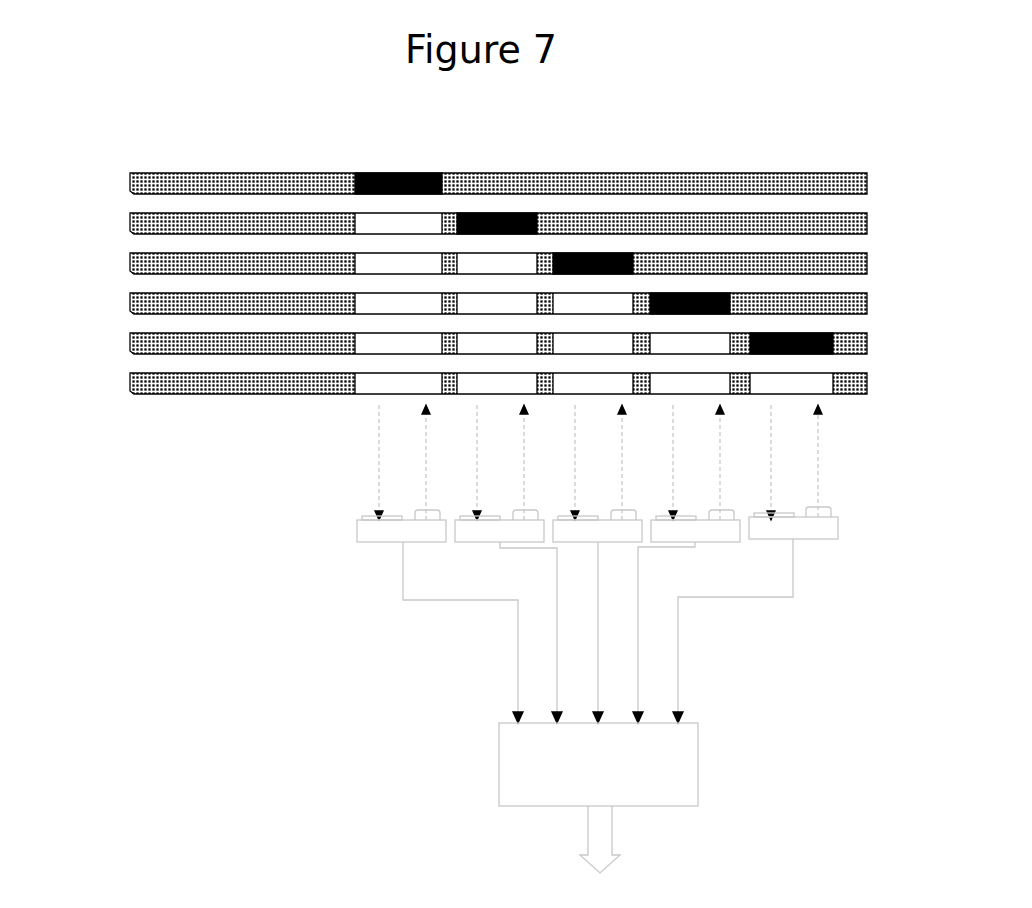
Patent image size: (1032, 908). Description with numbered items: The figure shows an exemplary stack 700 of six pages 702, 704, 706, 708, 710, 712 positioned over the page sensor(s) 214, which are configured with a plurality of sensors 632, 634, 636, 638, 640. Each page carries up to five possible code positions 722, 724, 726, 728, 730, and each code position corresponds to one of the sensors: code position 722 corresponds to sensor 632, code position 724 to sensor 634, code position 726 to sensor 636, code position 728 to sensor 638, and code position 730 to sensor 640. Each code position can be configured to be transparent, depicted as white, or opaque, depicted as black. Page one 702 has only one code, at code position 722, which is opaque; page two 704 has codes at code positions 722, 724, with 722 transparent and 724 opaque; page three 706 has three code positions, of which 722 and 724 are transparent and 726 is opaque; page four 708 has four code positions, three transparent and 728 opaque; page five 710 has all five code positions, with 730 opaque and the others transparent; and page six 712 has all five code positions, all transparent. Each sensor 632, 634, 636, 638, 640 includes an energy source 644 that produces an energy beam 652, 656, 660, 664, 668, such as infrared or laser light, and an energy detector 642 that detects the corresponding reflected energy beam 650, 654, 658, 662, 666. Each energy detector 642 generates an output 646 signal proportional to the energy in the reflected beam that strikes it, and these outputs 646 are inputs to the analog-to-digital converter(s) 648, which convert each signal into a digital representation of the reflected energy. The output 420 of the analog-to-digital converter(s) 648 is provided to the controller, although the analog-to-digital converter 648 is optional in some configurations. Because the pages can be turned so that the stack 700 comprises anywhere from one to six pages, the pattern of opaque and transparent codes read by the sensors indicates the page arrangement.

The stack 700 is at (843, 107).
The page one 702 is at (116, 186).
The page two 704 is at (116, 228).
The page three 706 is at (116, 270).
The page four 708 is at (116, 310).
The page five 710 is at (116, 351).
The page six 712 is at (116, 392).
The code position 722 is at (391, 150).
The code position 724 is at (503, 203).
The code position 726 is at (597, 242).
The code position 728 is at (708, 282).
The code position 730 is at (809, 321).
The page sensor(s) 214 is at (327, 698).
The sensor 632 is at (357, 533).
The sensor 634 is at (467, 543).
The sensor 636 is at (578, 543).
The sensor 638 is at (728, 543).
The sensor 640 is at (838, 535).
The energy detector 642 is at (370, 517).
The energy source 644 is at (428, 512).
The output signal 646 is at (557, 671).
The analog-to-digital converter(s) 648 is at (499, 765).
The reflected energy beam 650 is at (378, 427).
The energy beam 652 is at (425, 476).
The reflected energy beam 654 is at (476, 456).
The energy beam 656 is at (522, 457).
The reflected energy beam 658 is at (576, 456).
The energy beam 660 is at (622, 456).
The reflected energy beam 662 is at (673, 456).
The energy beam 664 is at (720, 456).
The reflected energy beam 666 is at (775, 450).
The energy beam 668 is at (820, 486).
The output 420 is at (588, 828).